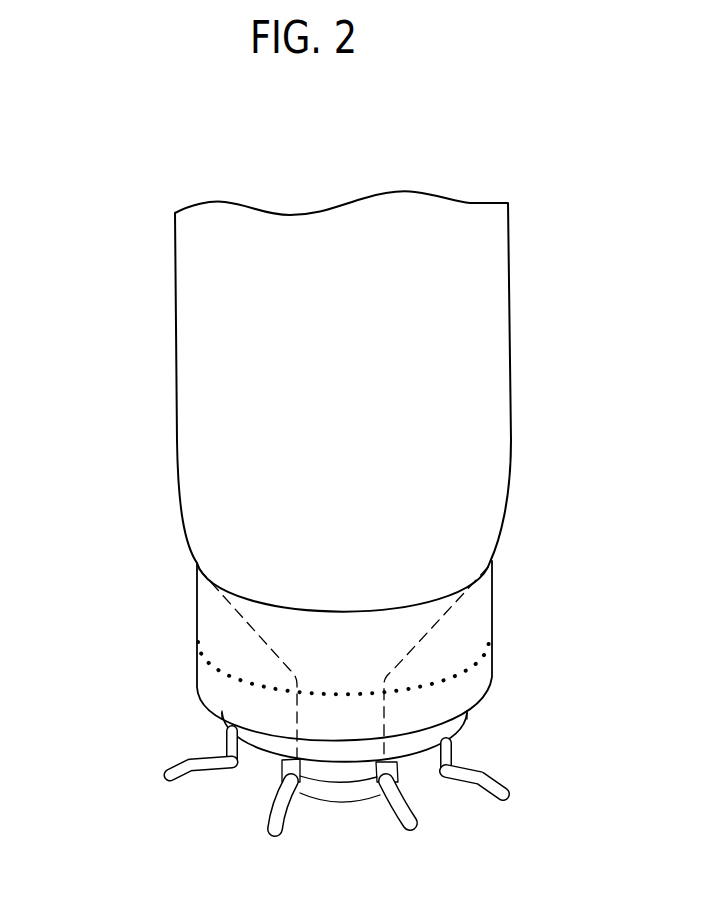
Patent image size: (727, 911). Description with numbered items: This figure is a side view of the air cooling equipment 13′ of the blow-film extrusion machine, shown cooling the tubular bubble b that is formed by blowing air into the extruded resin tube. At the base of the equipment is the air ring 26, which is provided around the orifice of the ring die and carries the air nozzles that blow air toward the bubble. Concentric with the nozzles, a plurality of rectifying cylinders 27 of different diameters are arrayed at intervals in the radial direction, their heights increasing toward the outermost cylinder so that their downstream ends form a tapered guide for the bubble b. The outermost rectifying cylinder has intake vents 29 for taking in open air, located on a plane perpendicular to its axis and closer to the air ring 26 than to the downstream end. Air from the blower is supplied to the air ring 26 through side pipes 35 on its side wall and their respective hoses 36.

The tubular bubble b is at (508, 327).
The air cooling equipment 13′ is at (159, 627).
The rectifying cylinders 27 is at (487, 605).
The intake vents 29 is at (474, 657).
The air ring 26 is at (442, 735).
The side pipes 35 is at (228, 737).
The hoses 36 is at (160, 770).